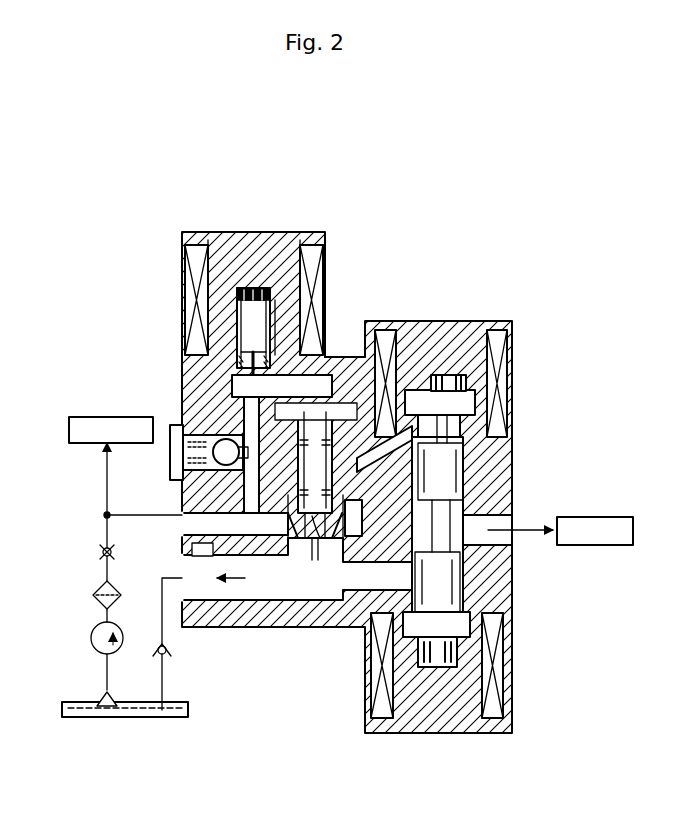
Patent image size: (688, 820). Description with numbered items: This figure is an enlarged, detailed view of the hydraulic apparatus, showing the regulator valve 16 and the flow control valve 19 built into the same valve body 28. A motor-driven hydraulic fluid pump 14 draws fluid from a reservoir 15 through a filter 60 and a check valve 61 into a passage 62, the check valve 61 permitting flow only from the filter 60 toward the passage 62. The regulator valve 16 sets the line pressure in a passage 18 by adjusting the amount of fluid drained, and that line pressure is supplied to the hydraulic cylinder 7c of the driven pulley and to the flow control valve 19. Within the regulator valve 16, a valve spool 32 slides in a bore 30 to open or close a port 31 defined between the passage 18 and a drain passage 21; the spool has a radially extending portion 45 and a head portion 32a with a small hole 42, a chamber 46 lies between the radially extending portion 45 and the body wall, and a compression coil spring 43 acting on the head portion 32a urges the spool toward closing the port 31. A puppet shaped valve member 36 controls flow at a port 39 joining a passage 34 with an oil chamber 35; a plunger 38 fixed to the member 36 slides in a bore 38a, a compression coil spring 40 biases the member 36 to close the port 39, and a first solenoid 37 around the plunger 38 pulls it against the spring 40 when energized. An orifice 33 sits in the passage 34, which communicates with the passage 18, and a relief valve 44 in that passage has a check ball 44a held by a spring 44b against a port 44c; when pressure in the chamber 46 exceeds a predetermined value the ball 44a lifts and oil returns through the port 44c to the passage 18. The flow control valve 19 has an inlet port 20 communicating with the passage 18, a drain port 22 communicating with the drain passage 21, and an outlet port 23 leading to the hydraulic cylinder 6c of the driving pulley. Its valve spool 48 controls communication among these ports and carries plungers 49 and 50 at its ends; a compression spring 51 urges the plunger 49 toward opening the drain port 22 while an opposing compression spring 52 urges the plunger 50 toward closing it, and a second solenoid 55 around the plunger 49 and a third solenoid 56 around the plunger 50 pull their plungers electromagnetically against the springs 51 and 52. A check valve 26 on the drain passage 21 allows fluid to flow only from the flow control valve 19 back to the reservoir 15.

The regulator valve 16 is at (284, 226).
The flow control valve 19 is at (447, 296).
The valve body 28 is at (469, 338).
The first solenoid 37 is at (196, 248).
The plunger 38 is at (252, 298).
The bore 38a is at (237, 288).
The compression coil spring 40 is at (278, 282).
The puppet shaped valve member 36 is at (240, 362).
The oil chamber 35 is at (290, 345).
The bore 30 is at (342, 360).
The compression coil spring 43 is at (294, 443).
The port 39 is at (240, 412).
The passage 34 is at (215, 440).
The relief valve 44 is at (170, 452).
The check ball 44a is at (195, 468).
The spring 44b is at (109, 415).
The port 44c is at (195, 505).
The orifice 33 is at (188, 515).
The radially extending portion 45 is at (270, 516).
The small hole 42 is at (366, 517).
The chamber 46 is at (384, 449).
The inlet port 20 is at (297, 569).
The drain port 22 is at (362, 600).
The valve spool 32 is at (295, 542).
The head portion 32a is at (312, 542).
The port 31 is at (314, 560).
The second solenoid 55 is at (386, 345).
The third solenoid 56 is at (380, 712).
The compression spring 51 is at (468, 378).
The plunger 49 is at (465, 410).
The valve spool 48 is at (440, 482).
The plunger 50 is at (467, 645).
The compression spring 52 is at (455, 665).
The outlet port 23 is at (478, 528).
The hydraulic cylinder 6c is at (590, 545).
The hydraulic cylinder 7c is at (80, 443).
The passage 18 is at (105, 485).
The passage 62 is at (105, 523).
The check valve 61 is at (100, 552).
The filter 60 is at (92, 594).
The hydraulic fluid pump 14 is at (114, 652).
The reservoir 15 is at (62, 710).
The drain passage 21 is at (162, 578).
The check valve 26 is at (168, 652).